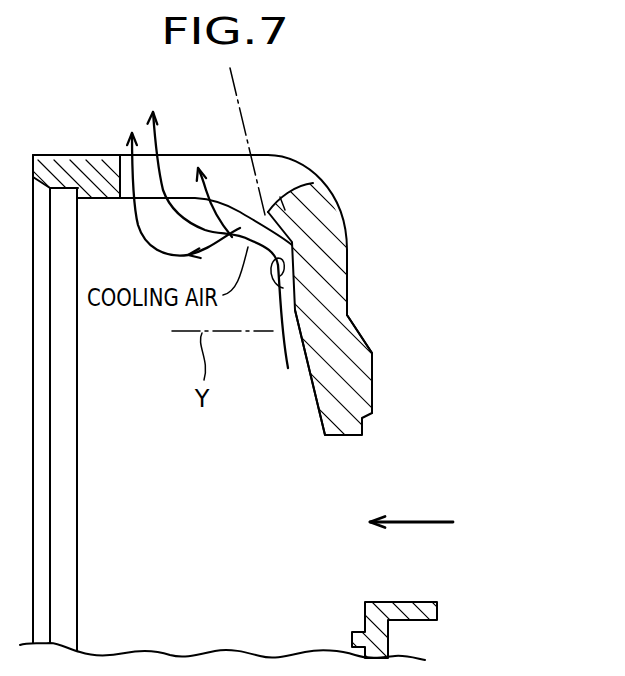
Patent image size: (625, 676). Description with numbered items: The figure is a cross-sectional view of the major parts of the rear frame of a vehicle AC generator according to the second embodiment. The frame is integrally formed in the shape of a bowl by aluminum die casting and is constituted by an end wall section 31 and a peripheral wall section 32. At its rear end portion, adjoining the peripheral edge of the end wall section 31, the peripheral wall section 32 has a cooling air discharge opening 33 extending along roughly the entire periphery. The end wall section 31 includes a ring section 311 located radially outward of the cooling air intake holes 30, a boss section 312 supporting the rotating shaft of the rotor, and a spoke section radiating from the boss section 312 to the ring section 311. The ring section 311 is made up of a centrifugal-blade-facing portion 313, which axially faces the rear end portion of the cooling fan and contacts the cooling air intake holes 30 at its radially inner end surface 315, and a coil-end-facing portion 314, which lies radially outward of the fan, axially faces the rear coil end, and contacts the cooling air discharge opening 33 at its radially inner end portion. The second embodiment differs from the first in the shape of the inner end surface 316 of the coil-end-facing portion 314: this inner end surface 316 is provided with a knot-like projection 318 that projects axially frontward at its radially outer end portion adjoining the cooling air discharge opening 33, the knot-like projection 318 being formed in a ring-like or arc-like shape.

The cooling air intake holes 30 is at (348, 478).
The end wall section 31 is at (335, 178).
The peripheral wall section 32 is at (88, 162).
The cooling air discharge opening 33 is at (182, 163).
The ring section 311 is at (350, 272).
The boss section 312 is at (437, 612).
The centrifugal-blade-facing portion 313 is at (362, 382).
The coil-end-facing portion 314 is at (325, 228).
The inner end surface of the centrifugal-blade-facing portion 315 is at (313, 397).
The inner end surface of the coil-end-facing portion 316 is at (283, 288).
The knot-like projection 318 is at (281, 205).